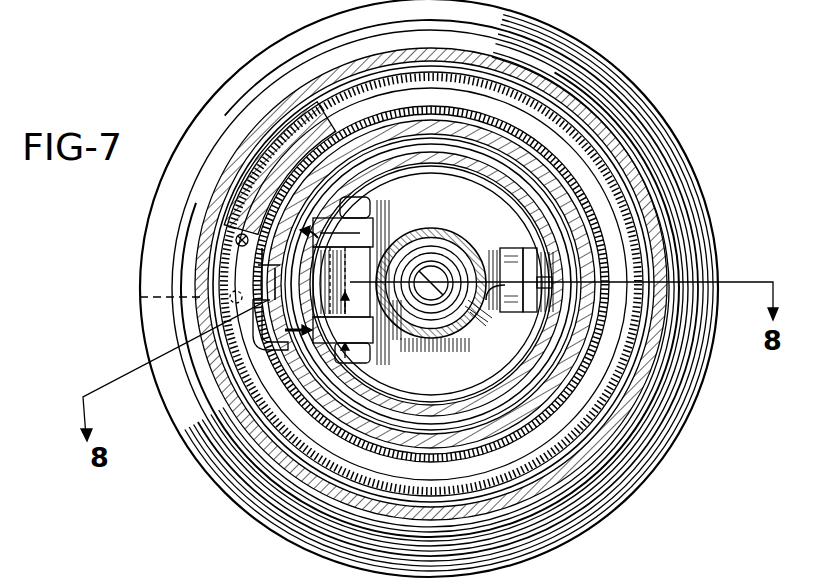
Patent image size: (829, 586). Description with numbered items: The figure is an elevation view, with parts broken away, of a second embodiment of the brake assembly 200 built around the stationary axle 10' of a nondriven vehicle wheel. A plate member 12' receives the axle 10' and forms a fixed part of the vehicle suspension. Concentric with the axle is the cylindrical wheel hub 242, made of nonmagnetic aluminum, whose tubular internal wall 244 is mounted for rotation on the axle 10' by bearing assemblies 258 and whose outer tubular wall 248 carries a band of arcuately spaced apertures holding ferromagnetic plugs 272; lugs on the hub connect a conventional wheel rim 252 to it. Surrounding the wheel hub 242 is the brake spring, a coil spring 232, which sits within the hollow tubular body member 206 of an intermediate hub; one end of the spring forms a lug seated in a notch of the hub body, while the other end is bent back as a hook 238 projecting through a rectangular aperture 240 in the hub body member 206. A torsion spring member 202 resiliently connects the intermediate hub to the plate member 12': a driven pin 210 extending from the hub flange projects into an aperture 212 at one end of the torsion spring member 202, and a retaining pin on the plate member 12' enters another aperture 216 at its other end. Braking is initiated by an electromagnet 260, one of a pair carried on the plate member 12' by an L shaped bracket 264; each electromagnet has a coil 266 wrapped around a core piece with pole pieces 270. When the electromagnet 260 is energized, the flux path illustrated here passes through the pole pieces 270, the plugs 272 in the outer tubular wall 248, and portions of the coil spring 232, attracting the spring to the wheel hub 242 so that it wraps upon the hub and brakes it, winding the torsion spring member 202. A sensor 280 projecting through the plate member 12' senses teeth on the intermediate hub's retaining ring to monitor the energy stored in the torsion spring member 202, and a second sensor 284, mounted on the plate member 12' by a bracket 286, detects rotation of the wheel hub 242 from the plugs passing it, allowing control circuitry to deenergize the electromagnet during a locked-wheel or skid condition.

The brake assembly 200 is at (311, 108).
The torsion spring member 202 is at (577, 147).
The wheel rim 252 is at (205, 100).
The plate member 12' is at (426, 284).
The wheel hub 242 is at (431, 146).
The hook 238 is at (250, 370).
The sensor 280 is at (415, 470).
The coil spring 232 is at (452, 433).
The tubular body member 206 is at (545, 203).
The outer tubular wall 248 is at (495, 403).
The plugs 272 is at (367, 402).
The bearing assemblies 258 is at (438, 342).
The tubular internal wall 244 is at (478, 322).
The stationary axle 10' is at (432, 249).
The L shaped bracket 264 is at (368, 198).
The coil 266 is at (356, 262).
The pole pieces 270 is at (365, 225).
The rectangular aperture 240 is at (262, 322).
The driven pin 210 is at (237, 238).
The aperture 212 is at (238, 250).
The aperture 216 is at (140, 297).
The electromagnet 260 is at (248, 455).
The sensor 284 is at (540, 240).
The bracket 286 is at (510, 268).